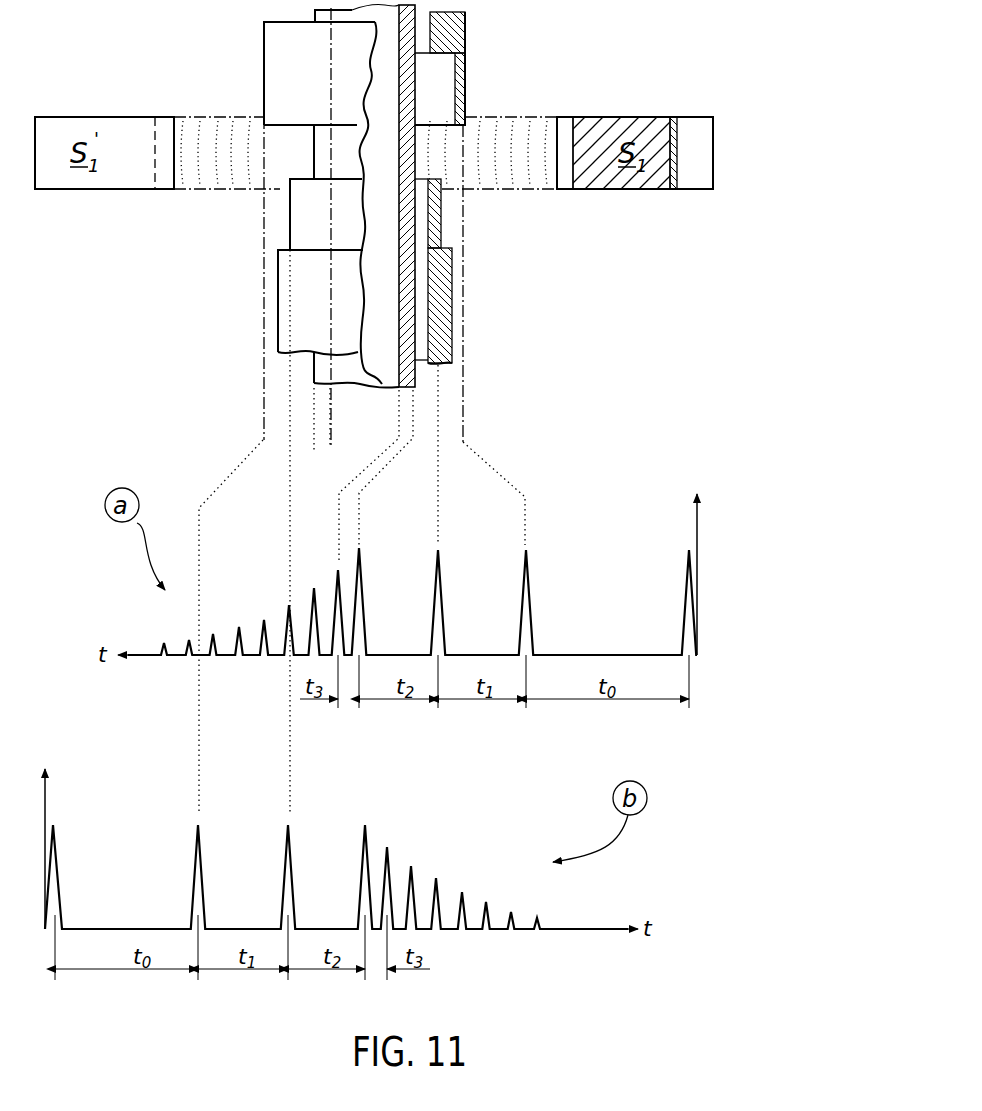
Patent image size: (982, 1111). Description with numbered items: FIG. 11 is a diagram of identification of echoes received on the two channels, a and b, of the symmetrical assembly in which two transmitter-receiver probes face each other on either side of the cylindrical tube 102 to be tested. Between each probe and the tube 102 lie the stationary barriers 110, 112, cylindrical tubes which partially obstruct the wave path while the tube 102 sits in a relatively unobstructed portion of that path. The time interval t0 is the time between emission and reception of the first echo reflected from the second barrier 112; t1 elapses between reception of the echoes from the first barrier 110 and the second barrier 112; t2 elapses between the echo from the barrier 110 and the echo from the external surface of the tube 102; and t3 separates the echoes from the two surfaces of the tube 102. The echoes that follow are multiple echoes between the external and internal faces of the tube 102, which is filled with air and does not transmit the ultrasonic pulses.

The tube 102 is at (415, 6).
The second barrier 112 is at (458, 85).
The first barrier 110 is at (435, 228).